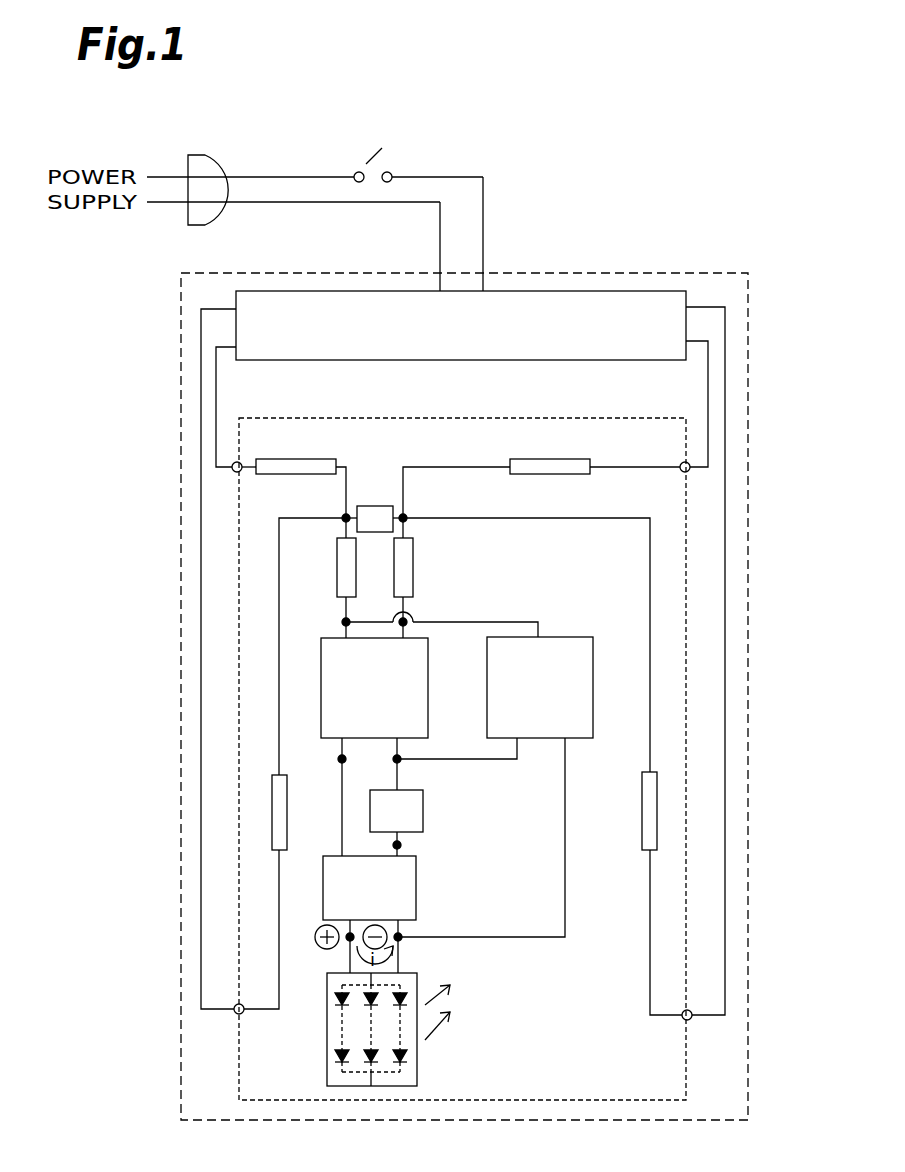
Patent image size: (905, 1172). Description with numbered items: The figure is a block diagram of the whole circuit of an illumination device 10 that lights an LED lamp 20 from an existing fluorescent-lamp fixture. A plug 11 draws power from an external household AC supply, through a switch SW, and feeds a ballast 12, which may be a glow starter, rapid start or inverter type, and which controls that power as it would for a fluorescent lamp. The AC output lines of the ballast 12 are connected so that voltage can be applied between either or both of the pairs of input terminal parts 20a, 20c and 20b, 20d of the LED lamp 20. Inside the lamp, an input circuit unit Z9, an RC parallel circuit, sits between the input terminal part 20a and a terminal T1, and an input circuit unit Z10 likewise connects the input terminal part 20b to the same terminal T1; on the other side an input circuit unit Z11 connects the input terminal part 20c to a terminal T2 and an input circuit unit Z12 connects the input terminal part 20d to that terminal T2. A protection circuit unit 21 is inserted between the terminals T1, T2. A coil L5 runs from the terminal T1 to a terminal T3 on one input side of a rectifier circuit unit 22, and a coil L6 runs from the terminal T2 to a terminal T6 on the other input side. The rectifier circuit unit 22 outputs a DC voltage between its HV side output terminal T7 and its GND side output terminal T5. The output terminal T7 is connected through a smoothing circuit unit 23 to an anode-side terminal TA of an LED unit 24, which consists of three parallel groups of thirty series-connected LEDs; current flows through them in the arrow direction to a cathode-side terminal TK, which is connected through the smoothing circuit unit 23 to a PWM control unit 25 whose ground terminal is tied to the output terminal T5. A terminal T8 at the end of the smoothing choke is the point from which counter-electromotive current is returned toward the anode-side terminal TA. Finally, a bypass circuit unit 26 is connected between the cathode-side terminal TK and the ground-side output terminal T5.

The illumination device 10 is at (540, 272).
The plug 11 is at (228, 160).
The ballast 12 is at (312, 362).
The LED lamp 20 is at (462, 405).
The input terminal part 20a is at (241, 471).
The input terminal part 20b is at (245, 1017).
The input terminal part 20c is at (680, 473).
The input terminal part 20d is at (683, 1020).
The protection circuit unit 21 is at (377, 505).
The rectifier circuit unit 22 is at (322, 637).
The smoothing circuit unit 23 is at (417, 893).
The LED unit 24 is at (418, 1057).
The PWM control unit 25 is at (423, 790).
The bypass circuit unit 26 is at (593, 637).
The input circuit unit Z9 is at (292, 458).
The input circuit unit Z10 is at (287, 808).
The input circuit unit Z11 is at (567, 457).
The input circuit unit Z12 is at (643, 850).
The coil L5 is at (337, 572).
The coil L6 is at (413, 575).
The terminal T1 is at (348, 513).
The terminal T2 is at (406, 514).
The terminal T3 is at (348, 618).
The ground-side output terminal T5 is at (401, 757).
The terminal T6 is at (407, 625).
The high-voltage-side output terminal T7 is at (340, 764).
The terminal T8 is at (401, 843).
The anode-side terminal TA is at (343, 943).
The cathode-side terminal TK is at (403, 933).
The switch SW is at (366, 162).
The high-voltage side HV is at (322, 761).
The ground terminal GND is at (372, 761).